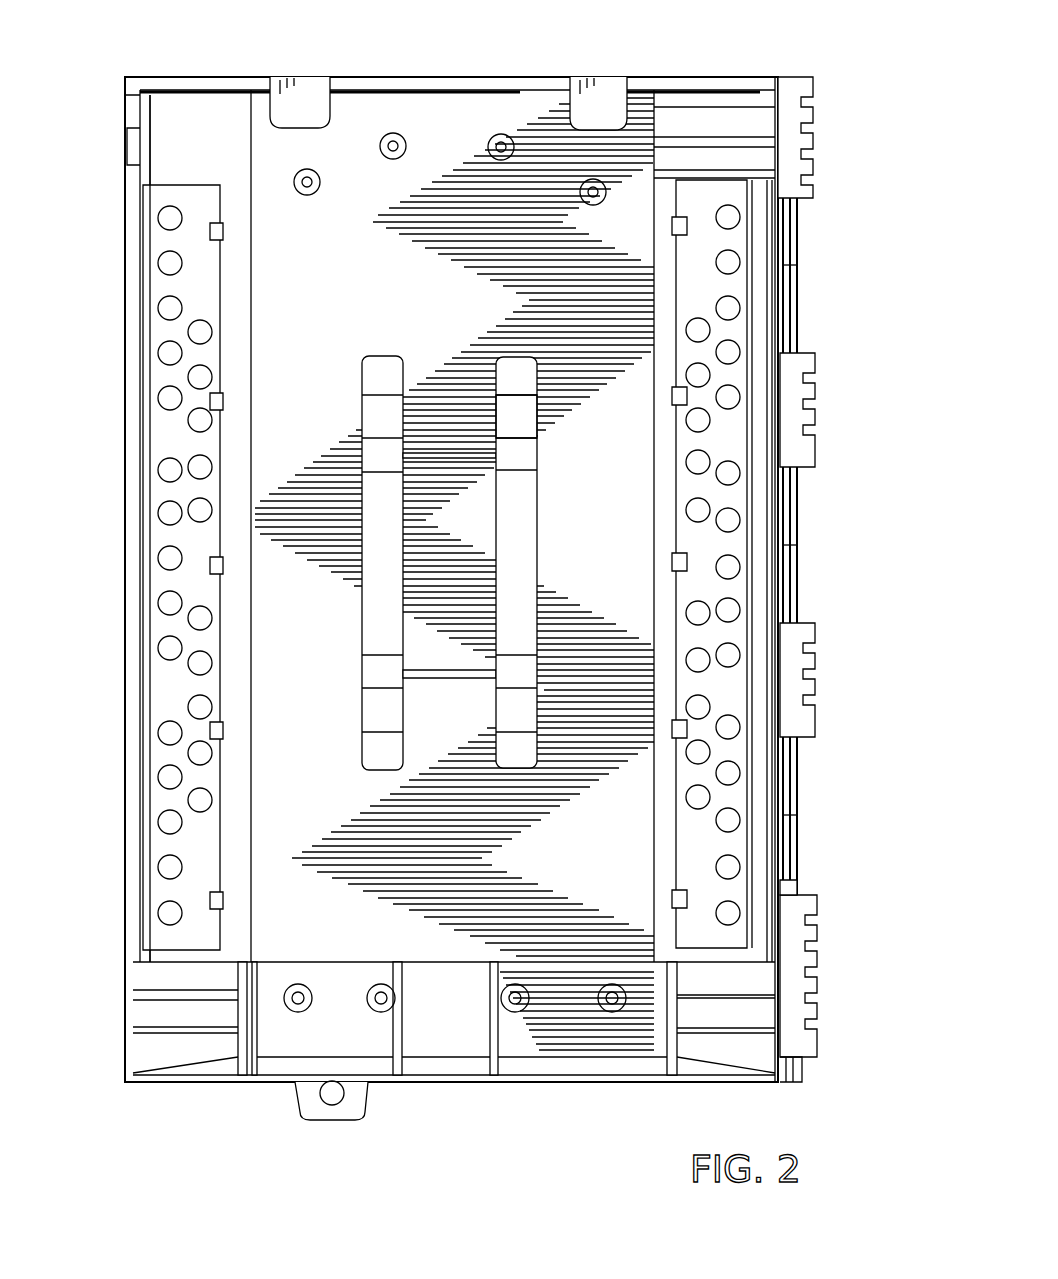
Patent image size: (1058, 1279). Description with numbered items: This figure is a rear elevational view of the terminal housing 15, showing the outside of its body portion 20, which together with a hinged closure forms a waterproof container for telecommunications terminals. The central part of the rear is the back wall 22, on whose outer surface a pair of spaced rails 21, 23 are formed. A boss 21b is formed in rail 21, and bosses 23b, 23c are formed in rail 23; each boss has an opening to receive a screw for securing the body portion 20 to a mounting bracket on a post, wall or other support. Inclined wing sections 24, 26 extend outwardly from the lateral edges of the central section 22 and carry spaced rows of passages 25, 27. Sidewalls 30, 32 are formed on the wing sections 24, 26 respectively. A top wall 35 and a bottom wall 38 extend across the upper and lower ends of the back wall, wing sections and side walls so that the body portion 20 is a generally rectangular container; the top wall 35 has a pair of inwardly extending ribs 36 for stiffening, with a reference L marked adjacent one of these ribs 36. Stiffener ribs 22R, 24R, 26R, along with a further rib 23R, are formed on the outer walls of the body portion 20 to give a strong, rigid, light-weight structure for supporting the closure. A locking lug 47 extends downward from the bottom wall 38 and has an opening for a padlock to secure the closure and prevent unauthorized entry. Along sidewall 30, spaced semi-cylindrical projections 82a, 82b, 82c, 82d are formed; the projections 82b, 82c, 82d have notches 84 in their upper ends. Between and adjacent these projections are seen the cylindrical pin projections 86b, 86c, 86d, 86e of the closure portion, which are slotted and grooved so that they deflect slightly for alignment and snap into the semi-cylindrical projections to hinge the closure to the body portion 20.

The terminal housing 15 is at (180, 75).
The body portion 20 is at (442, 120).
The rail 21 is at (565, 562).
The boss 21b is at (520, 450).
The back wall 22 is at (355, 272).
The stiffener rib 22R is at (360, 968).
The rail 23 is at (394, 563).
The boss 23b is at (385, 460).
The boss 23c is at (375, 675).
The rail rear portion 23R is at (490, 1065).
The wing section 24 is at (686, 571).
The stiffener rib 24R is at (730, 995).
The passages 25 is at (728, 520).
The wing section 26 is at (234, 567).
The stiffener rib 26R is at (165, 1000).
The passages 27 is at (170, 308).
The sidewall 30 is at (780, 560).
The sidewall 32 is at (140, 425).
The top wall 35 is at (400, 77).
The ribs 36 is at (300, 100).
The bottom wall 38 is at (555, 1065).
The locking lug 47 is at (345, 1105).
The semi-cylindrical projection 82a is at (800, 88).
The semi-cylindrical projection 82b is at (800, 358).
The semi-cylindrical projection 82c is at (805, 668).
The semi-cylindrical projection 82d is at (810, 1025).
The notch 84 is at (790, 892).
The cylindrical pin projection 86b is at (790, 300).
The cylindrical pin projection 86c is at (795, 592).
The cylindrical pin projection 86d is at (800, 835).
The cylindrical pin projection 86e is at (800, 1082).
The length dimension L is at (330, 115).